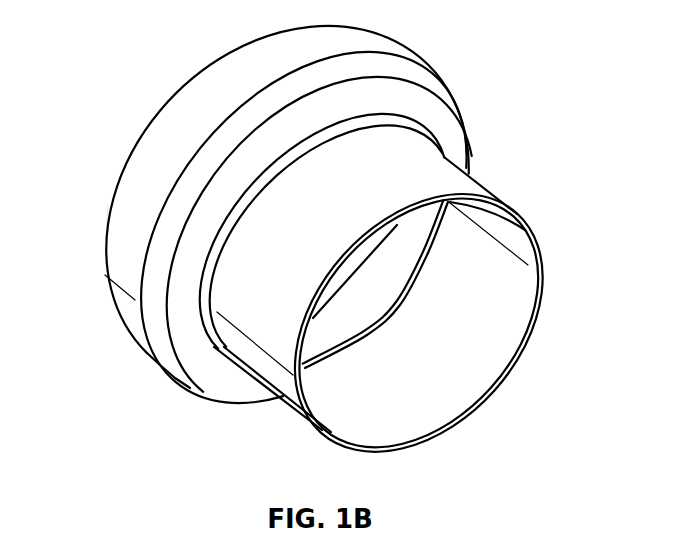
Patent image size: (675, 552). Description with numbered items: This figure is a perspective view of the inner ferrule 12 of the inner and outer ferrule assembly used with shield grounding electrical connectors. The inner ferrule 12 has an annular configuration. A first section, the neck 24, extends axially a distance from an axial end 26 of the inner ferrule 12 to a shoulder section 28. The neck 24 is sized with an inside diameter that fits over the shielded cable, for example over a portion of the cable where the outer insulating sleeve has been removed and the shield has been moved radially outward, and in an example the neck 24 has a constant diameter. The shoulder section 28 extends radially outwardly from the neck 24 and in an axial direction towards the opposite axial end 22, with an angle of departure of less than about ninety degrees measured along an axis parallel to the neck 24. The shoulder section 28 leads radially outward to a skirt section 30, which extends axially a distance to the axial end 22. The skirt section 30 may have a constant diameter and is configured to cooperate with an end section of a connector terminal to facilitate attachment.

The inner ferrule 12 is at (506, 128).
The axial end 22 is at (108, 205).
The neck 24 is at (275, 323).
The axial end 26 is at (543, 272).
The shoulder section 28 is at (187, 317).
The skirt section 30 is at (121, 250).